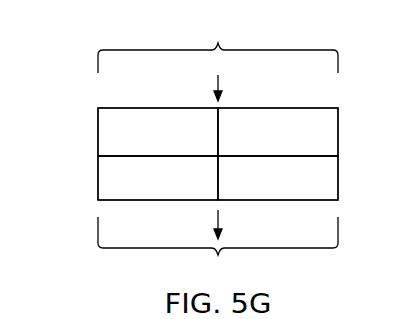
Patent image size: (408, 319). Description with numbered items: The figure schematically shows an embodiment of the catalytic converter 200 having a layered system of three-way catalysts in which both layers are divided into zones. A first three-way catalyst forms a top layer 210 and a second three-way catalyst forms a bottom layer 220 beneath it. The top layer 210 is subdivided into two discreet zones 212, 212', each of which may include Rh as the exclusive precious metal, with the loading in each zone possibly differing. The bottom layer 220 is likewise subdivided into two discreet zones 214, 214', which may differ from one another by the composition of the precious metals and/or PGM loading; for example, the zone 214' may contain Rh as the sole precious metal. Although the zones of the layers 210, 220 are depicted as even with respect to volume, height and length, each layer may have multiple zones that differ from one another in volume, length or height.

The catalytic converter 200 is at (326, 103).
The top layer 210 is at (218, 47).
The bottom layer 220 is at (218, 249).
The zone 212 is at (158, 116).
The zone 212' is at (278, 115).
The zone 214 is at (158, 197).
The zone 214' is at (278, 197).